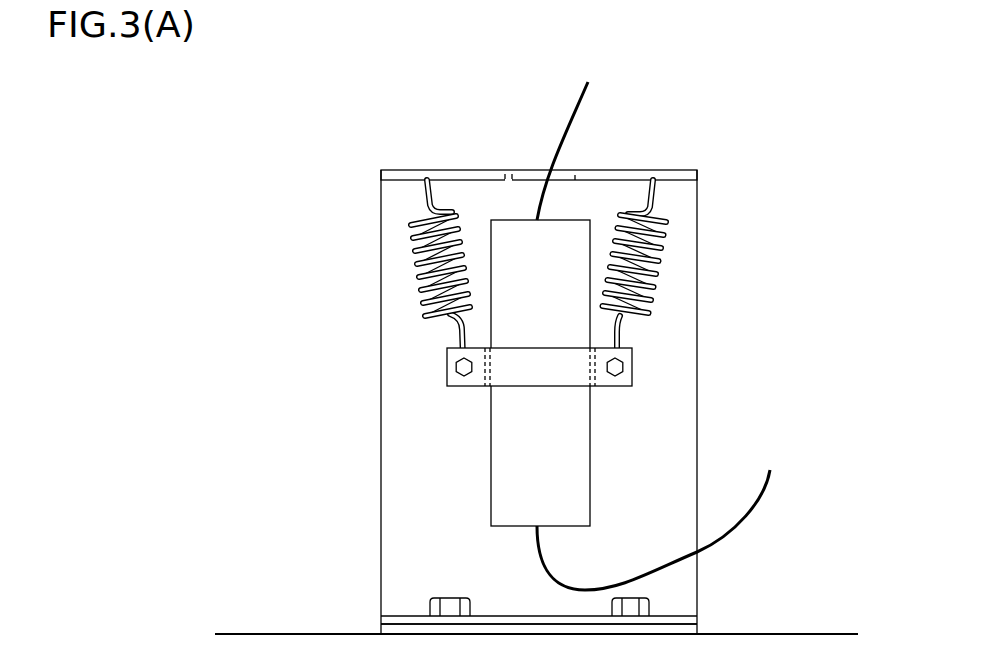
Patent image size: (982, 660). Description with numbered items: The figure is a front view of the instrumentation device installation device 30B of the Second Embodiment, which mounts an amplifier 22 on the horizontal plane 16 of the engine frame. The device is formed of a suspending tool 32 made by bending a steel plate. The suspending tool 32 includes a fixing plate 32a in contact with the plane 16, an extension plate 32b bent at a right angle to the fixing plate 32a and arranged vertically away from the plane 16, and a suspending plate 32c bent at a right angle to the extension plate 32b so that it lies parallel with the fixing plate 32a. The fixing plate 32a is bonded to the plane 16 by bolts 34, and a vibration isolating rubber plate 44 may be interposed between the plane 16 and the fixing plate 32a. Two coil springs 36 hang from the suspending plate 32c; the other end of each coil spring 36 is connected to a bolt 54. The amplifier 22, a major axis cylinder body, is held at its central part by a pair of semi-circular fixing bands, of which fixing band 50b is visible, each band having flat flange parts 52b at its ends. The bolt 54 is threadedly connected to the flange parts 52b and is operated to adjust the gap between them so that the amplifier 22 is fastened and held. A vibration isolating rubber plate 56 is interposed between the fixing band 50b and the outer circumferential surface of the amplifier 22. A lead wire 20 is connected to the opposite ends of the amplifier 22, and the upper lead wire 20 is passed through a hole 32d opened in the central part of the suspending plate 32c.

The plane 16 is at (797, 634).
The lead wire 20 is at (577, 124).
The amplifier 22 is at (580, 493).
The instrumentation device installation device 30B is at (524, 365).
The suspending tool 32 is at (460, 365).
The fixing plate 32a is at (408, 614).
The extension plate 32b is at (381, 371).
The suspending plate 32c is at (405, 180).
The hole 32d is at (515, 168).
The bolts 34 is at (450, 598).
The coil spring 36 is at (423, 303).
The vibration isolating rubber plate 44 is at (668, 624).
The fixing band 50b is at (582, 414).
The flange part 52b is at (457, 386).
The bolt 54 is at (618, 366).
The vibration isolating rubber plate 56 is at (583, 384).